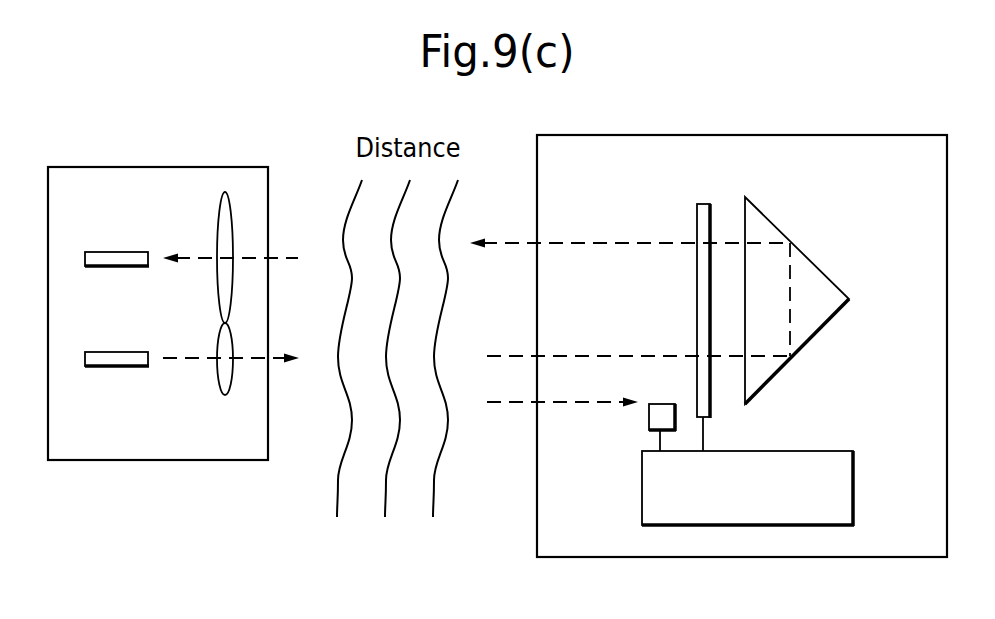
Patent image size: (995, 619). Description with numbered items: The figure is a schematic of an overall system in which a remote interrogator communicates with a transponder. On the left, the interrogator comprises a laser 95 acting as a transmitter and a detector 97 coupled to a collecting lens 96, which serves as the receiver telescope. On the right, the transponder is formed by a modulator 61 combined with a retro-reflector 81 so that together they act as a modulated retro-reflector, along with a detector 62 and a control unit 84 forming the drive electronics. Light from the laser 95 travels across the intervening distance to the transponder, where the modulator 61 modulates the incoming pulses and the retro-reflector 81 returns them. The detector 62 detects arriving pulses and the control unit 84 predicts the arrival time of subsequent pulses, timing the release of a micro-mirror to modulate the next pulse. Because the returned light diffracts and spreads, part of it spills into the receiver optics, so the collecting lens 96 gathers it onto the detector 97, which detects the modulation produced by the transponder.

The modulator 61 is at (703, 223).
The detector 62 is at (649, 416).
The retro-reflector 81 is at (813, 287).
The control unit 84 is at (840, 490).
The laser 95 is at (118, 360).
The collecting lens 96 is at (232, 208).
The detector 97 is at (108, 256).